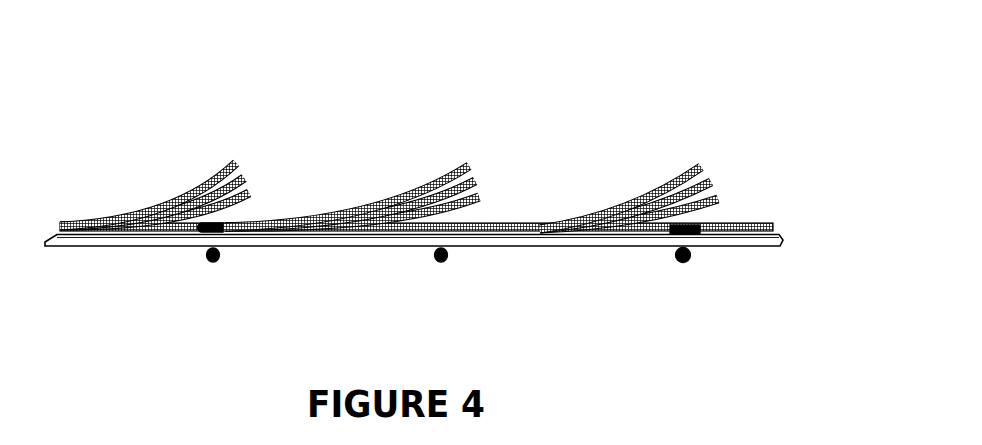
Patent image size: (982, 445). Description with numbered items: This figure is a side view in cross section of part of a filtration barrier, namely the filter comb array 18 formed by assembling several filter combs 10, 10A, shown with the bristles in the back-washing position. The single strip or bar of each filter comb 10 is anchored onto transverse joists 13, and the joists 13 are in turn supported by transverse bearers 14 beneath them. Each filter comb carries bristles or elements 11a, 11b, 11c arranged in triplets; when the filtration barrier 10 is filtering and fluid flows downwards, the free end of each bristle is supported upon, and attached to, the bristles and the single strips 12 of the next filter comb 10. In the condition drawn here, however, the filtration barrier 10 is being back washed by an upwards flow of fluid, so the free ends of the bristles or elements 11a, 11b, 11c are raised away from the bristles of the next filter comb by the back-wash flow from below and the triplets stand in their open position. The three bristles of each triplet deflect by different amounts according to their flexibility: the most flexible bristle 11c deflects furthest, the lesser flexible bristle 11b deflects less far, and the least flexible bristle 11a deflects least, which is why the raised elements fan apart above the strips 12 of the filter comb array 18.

The filter comb 10 is at (361, 145).
The filter comb 10A is at (361, 145).
The bristle 11a is at (717, 197).
The bristle 11b is at (705, 186).
The bristle 11c is at (467, 157).
The single strip 12 is at (670, 226).
The transverse joist 13 is at (465, 247).
The transverse bearer 14 is at (675, 258).
The filter comb array 18 is at (212, 153).